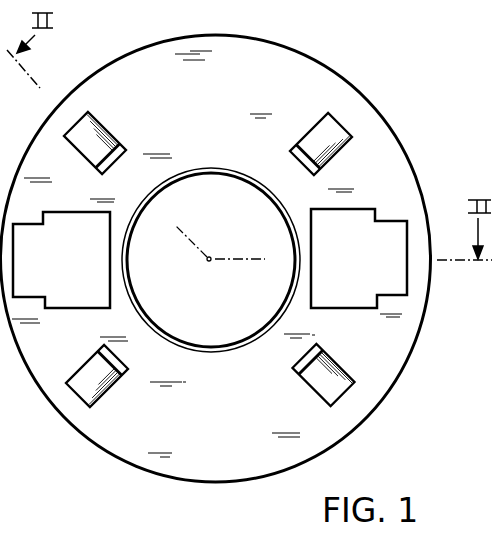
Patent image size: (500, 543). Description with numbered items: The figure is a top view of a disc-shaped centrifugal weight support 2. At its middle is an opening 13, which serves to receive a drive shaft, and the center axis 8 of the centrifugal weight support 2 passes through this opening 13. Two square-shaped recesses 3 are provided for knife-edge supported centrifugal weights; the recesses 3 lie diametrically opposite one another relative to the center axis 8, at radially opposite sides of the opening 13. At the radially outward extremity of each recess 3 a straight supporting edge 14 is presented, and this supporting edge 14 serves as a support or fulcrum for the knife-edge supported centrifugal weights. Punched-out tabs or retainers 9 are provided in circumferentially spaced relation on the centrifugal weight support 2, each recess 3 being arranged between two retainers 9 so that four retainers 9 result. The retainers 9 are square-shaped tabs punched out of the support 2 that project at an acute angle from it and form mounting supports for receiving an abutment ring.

The centrifugal weight support 2 is at (385, 372).
The recess 3 is at (386, 230).
The center axis 8 is at (211, 256).
The retainer 9 is at (107, 126).
The opening 13 is at (240, 350).
The supporting edge 14 is at (17, 248).